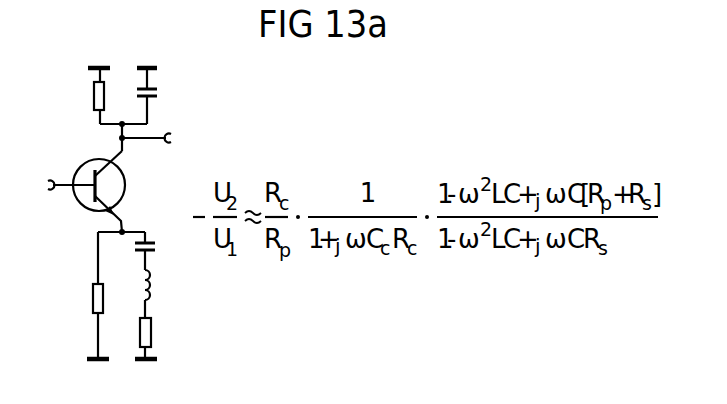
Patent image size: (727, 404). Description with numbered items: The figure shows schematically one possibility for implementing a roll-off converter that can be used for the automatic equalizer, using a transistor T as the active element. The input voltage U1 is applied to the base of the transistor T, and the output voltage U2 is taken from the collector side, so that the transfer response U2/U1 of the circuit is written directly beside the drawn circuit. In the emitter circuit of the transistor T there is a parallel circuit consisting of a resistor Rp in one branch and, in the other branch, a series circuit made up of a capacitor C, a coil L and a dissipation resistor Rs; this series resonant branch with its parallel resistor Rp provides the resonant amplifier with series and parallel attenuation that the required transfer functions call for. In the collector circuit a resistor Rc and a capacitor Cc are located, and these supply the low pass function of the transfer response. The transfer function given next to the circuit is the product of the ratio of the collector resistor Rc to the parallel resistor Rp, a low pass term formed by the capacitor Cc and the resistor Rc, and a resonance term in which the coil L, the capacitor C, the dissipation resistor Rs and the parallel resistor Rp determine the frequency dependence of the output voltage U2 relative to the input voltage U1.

The resistor Rc is at (87, 96).
The capacitor Cc is at (158, 96).
The output voltage U2 is at (160, 138).
The input voltage U1 is at (57, 187).
The transistor T is at (110, 191).
The resistor Rp is at (85, 295).
The capacitor C is at (154, 251).
The coil L is at (159, 288).
The dissipation resistor Rs is at (155, 329).